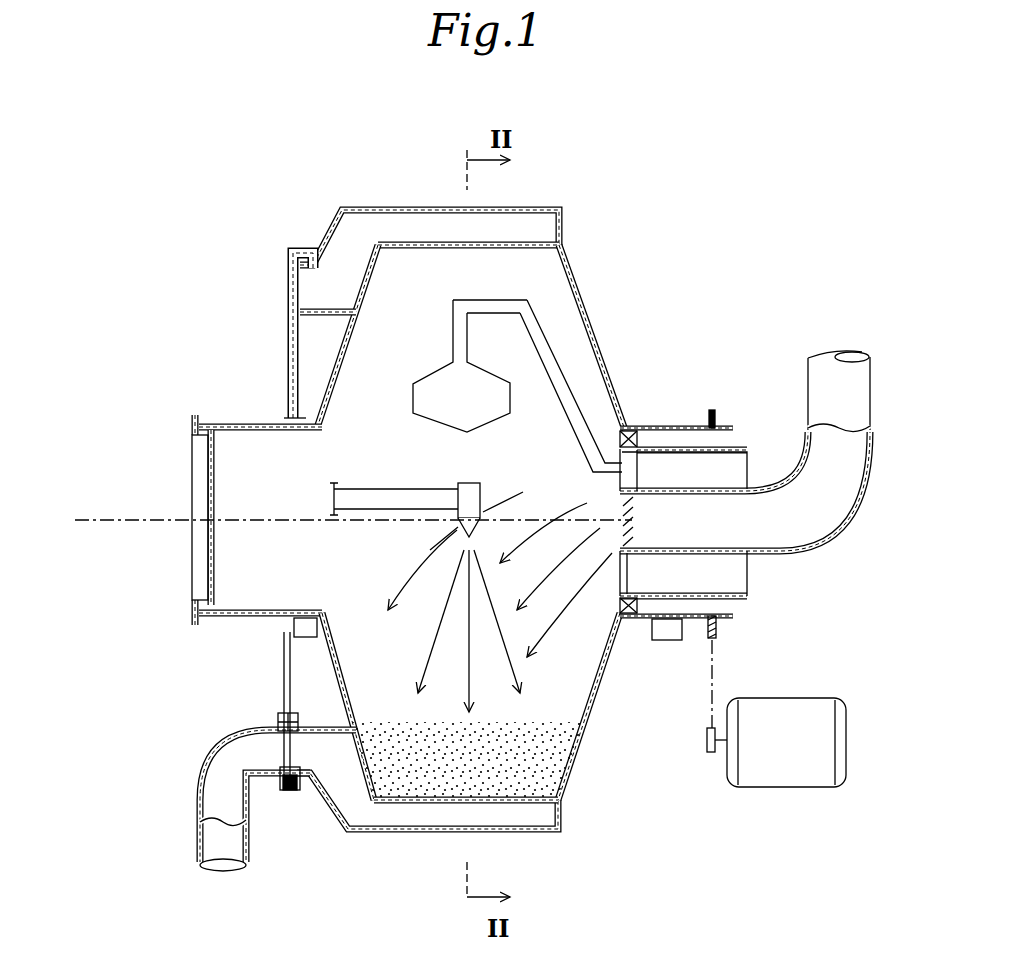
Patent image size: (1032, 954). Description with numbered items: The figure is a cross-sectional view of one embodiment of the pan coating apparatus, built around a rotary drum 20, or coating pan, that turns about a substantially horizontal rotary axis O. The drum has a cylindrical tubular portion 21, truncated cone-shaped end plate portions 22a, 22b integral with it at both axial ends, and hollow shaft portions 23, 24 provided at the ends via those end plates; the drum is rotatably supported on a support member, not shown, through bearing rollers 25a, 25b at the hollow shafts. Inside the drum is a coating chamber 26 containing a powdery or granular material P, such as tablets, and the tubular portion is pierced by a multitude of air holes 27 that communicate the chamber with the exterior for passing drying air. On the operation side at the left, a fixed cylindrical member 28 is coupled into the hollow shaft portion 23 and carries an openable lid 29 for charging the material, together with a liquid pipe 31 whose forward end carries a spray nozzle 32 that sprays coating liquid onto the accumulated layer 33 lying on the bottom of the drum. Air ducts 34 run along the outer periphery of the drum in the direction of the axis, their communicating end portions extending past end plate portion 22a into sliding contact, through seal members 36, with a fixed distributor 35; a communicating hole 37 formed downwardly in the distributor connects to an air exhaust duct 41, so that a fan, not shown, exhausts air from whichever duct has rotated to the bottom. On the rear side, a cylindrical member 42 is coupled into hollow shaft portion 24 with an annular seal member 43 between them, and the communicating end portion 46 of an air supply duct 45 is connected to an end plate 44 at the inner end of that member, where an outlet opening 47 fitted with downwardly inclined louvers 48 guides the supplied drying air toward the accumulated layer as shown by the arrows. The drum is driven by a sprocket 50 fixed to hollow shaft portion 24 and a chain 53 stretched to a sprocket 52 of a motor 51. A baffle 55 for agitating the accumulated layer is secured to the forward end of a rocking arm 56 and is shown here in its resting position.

The rotary drum 20 is at (582, 267).
The cylindrical tubular portion 21 is at (430, 803).
The end plate portion 22a is at (338, 363).
The end plate portion 22b is at (597, 340).
The hollow shaft portion 23 is at (273, 620).
The hollow shaft portion 24 is at (643, 617).
The bearing roller 25a is at (283, 677).
The bearing roller 25b is at (668, 640).
The coating chamber 26 is at (418, 466).
The air holes 27 is at (432, 258).
The cylindrical member 28 is at (223, 620).
The openable lid 29 is at (215, 567).
The liquid pipe 31 is at (373, 500).
The spray nozzle 32 is at (480, 485).
The accumulated layer 33 is at (373, 800).
The air ducts 34 is at (538, 208).
The distributor 35 is at (288, 383).
The seal members 36 is at (290, 790).
The communicating hole 37 is at (281, 748).
The air exhaust duct 41 is at (197, 833).
The cylindrical member 42 is at (733, 597).
The annular seal member 43 is at (630, 430).
The end plate 44 is at (630, 575).
The air supply duct 45 is at (840, 527).
The communicating end portion 46 is at (710, 443).
The outlet opening 47 is at (673, 487).
The louvers 48 is at (617, 502).
The sprocket 50 is at (715, 625).
The motor 51 is at (810, 703).
The sprocket 52 is at (709, 753).
The chain 53 is at (713, 680).
The baffle 55 is at (437, 383).
The rocking arm 56 is at (535, 327).
The rotary axis O is at (281, 518).
The powdery or granular material P is at (547, 770).